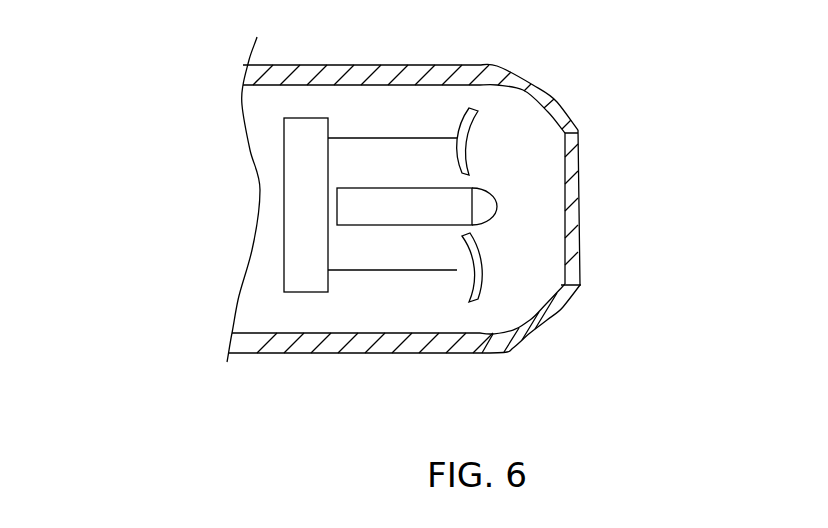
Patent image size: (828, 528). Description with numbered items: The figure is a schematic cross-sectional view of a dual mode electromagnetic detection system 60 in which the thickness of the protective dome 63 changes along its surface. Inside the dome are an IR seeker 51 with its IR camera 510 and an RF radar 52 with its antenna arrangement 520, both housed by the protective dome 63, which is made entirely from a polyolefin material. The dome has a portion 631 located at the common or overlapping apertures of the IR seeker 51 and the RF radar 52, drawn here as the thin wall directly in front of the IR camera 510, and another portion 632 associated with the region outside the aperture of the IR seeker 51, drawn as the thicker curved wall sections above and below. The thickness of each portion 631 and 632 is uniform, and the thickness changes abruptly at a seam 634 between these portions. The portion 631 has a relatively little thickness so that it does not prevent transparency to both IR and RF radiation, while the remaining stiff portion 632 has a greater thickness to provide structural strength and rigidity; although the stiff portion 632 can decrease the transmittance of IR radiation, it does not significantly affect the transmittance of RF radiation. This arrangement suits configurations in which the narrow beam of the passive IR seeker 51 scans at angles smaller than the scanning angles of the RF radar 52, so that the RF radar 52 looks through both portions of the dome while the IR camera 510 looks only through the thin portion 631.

The dual mode electromagnetic detection system 60 is at (170, 328).
The protective dome 63 is at (593, 314).
The portion 631 is at (580, 197).
The portion 632 is at (515, 68).
The seam 634 is at (579, 133).
The RF radar 52 is at (303, 293).
The IR seeker 51 is at (383, 225).
The IR camera 510 is at (477, 205).
The antenna arrangement 520 is at (463, 120).